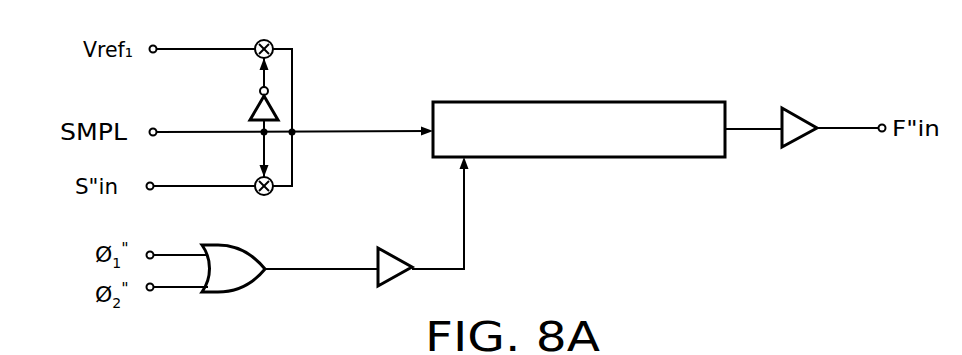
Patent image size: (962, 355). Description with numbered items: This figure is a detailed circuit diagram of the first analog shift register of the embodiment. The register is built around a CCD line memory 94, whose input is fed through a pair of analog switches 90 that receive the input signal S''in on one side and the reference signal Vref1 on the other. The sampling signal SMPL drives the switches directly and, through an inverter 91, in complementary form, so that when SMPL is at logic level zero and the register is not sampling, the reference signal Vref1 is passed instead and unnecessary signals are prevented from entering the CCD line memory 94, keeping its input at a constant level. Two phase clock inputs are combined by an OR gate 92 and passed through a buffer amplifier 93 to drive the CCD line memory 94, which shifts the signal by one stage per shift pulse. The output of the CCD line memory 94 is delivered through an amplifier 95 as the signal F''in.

The analog switch 90 is at (270, 42).
The inverter 91 is at (252, 112).
The OR gate 92 is at (255, 254).
The buffer amplifier 93 is at (390, 256).
The CCD line memory 94 is at (628, 101).
The amplifier 95 is at (806, 112).